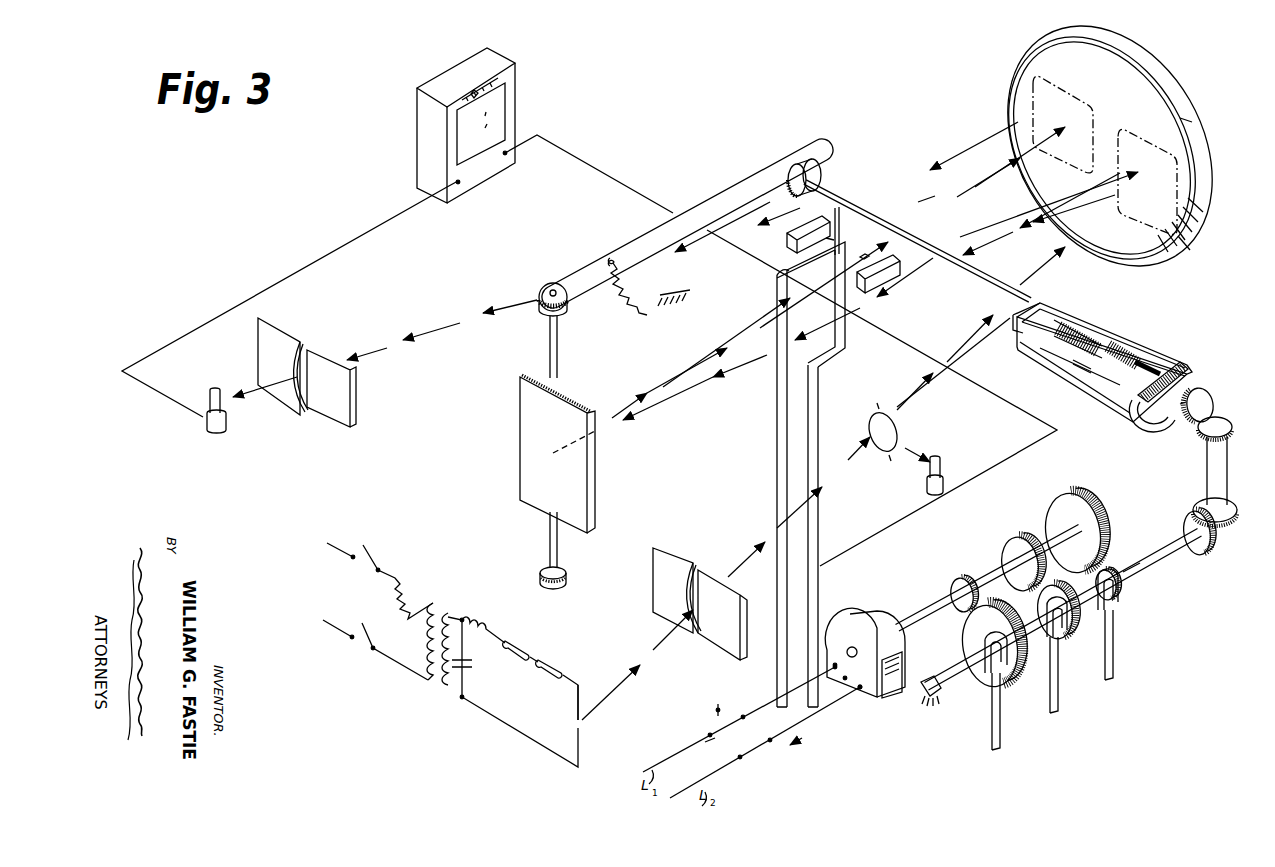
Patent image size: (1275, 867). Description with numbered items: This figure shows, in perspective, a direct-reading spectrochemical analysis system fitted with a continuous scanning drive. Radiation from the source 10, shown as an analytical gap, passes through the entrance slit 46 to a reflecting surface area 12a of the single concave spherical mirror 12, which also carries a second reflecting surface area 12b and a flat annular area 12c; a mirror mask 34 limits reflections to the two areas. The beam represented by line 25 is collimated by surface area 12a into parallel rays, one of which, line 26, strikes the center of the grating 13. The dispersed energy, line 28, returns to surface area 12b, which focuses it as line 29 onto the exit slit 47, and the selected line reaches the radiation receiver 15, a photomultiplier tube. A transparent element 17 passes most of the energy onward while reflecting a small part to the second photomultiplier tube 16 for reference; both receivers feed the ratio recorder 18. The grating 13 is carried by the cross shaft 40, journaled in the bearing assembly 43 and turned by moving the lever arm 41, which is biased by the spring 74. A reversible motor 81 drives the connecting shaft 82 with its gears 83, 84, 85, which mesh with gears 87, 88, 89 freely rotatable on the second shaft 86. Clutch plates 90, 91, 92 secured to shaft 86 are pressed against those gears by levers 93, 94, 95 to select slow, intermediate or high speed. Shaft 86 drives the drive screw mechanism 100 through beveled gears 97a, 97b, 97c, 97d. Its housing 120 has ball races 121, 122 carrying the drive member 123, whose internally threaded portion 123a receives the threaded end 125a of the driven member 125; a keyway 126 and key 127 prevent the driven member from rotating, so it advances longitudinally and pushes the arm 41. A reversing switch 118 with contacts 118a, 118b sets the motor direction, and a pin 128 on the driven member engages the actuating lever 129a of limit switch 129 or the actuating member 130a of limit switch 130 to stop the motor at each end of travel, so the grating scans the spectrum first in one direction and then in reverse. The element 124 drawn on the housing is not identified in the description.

The source 10 is at (582, 722).
The concave spherical mirror 12 is at (1170, 70).
The reflecting surface area 12a is at (1165, 185).
The second reflecting surface area 12b is at (1040, 108).
The flat annular area 12c is at (1178, 118).
The grating 13 is at (592, 480).
The radiation receiver 15 is at (210, 393).
The second photomultiplier tube 16 is at (945, 470).
The transparent element 17 is at (870, 423).
The ratio recorder 18 is at (520, 108).
The line 25 is at (752, 556).
The line 26 is at (735, 370).
The line 28 is at (688, 368).
The line 29 is at (443, 327).
The mirror mask 34 is at (1178, 238).
The cross shaft 40 is at (560, 358).
The lever arm 41 is at (716, 190).
The bearing assembly 43 is at (557, 589).
The entrance slit 46 is at (695, 607).
The exit slit 47 is at (302, 407).
The spring 74 is at (657, 293).
The reversible motor 81 is at (858, 632).
The connecting shaft 82 is at (918, 620).
The gear 83 is at (963, 580).
The gear 84 is at (1020, 538).
The gear 85 is at (1075, 492).
The second shaft 86 is at (1153, 560).
The gear 87 is at (1030, 680).
The gear 88 is at (1073, 653).
The gear 89 is at (1123, 590).
The clutch plate 90 is at (988, 640).
The clutch plate 91 is at (1043, 604).
The clutch plate 92 is at (1150, 568).
The lever 93 is at (1000, 742).
The lever 94 is at (1056, 712).
The lever 95 is at (1113, 680).
The beveled gear 97a is at (1206, 551).
The beveled gear 97b is at (1232, 523).
The beveled gear 97c is at (1230, 424).
The beveled gear 97d is at (1214, 398).
The drive screw mechanism 100 is at (1145, 307).
The reversing switch 118 is at (713, 722).
The contact 118a is at (718, 710).
The contact 118b is at (702, 755).
The housing 120 is at (1165, 352).
The ball race 121 is at (1130, 340).
The ball race 122 is at (1185, 368).
The drive member 123 is at (1157, 408).
The internally threaded portion 123a is at (1085, 370).
The housing floor 124 is at (1072, 368).
The driven member 125 is at (911, 192).
The threaded end 125a is at (822, 168).
The keyway 126 is at (975, 286).
The key 127 is at (1015, 328).
The pin 128 is at (843, 236).
The limit switch 129 is at (787, 245).
The actuating lever 129a is at (778, 275).
The limit switch 130 is at (811, 474).
The actuating member 130a is at (857, 264).